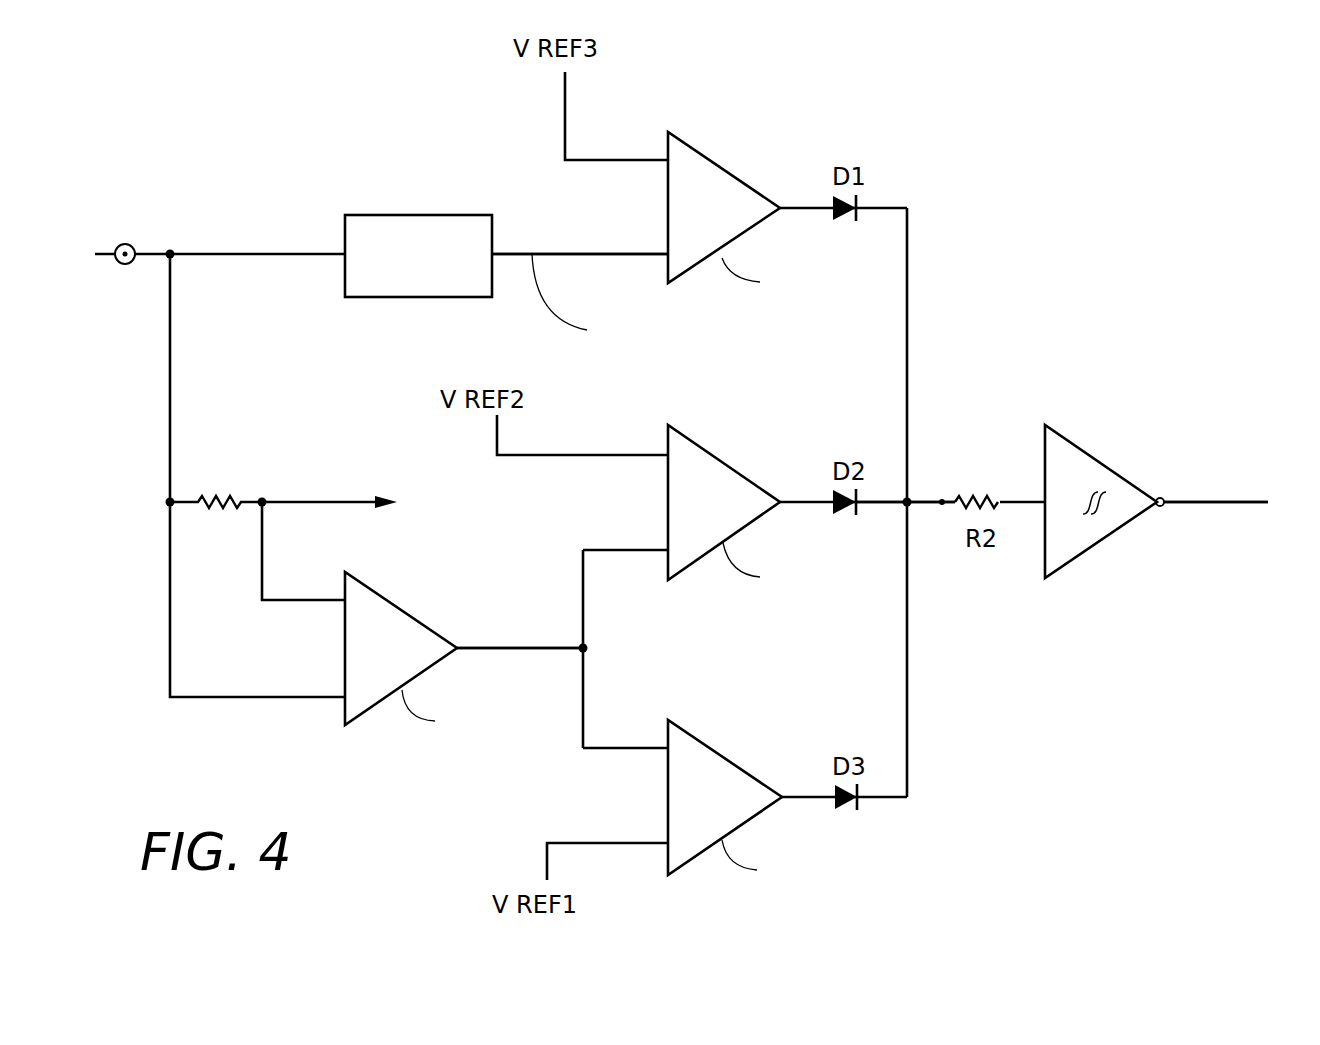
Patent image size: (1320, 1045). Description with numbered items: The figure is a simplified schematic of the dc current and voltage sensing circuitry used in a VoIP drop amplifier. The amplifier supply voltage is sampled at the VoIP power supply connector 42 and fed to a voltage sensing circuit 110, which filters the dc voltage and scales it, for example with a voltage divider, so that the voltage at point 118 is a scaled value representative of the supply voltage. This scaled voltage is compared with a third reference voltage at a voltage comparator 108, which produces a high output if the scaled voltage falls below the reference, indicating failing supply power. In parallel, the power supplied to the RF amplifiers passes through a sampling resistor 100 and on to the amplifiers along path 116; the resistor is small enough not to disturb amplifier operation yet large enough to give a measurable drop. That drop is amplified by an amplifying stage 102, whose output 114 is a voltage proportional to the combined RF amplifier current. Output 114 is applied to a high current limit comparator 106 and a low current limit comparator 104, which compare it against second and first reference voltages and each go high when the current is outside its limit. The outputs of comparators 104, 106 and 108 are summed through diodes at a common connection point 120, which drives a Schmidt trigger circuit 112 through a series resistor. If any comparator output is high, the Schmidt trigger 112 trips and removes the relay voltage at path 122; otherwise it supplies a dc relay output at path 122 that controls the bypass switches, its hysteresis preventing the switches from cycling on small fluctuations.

The VoIP power supply connector 42 is at (125, 243).
The sampling resistor 100 is at (222, 495).
The amplifying stage 102 is at (397, 603).
The low current limit comparator 104 is at (722, 750).
The high current limit comparator 106 is at (720, 455).
The voltage comparator 108 is at (722, 158).
The voltage sensing circuit 110 is at (447, 215).
The Schmidt trigger circuit 112 is at (1078, 440).
The amplifier output 114 is at (543, 650).
The path 116 is at (300, 504).
The point 118 is at (625, 254).
The common connection point 120 is at (903, 505).
The path 122 is at (1205, 504).